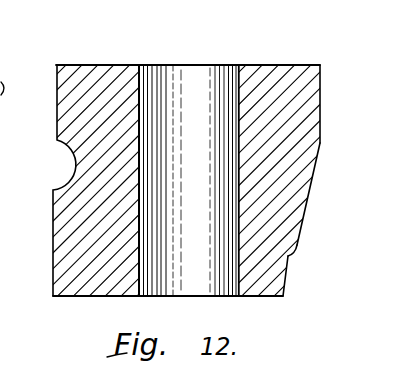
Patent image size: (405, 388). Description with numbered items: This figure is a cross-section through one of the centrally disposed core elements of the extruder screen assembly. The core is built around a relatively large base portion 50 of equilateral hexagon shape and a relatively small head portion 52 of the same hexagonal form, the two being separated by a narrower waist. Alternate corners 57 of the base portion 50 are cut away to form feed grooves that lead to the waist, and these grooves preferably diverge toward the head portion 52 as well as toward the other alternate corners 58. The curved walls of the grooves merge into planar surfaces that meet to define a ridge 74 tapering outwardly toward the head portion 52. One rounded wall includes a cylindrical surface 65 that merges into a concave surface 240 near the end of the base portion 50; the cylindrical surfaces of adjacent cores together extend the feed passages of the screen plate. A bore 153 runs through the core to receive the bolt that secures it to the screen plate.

The base portion 50 is at (80, 298).
The head portion 52 is at (275, 72).
The alternate corners 57 is at (321, 100).
The other alternate corners 58 is at (57, 71).
The cylindrical surface 65 is at (286, 286).
The ridge 74 is at (308, 199).
The bore 153 is at (140, 83).
The concave surface 240 is at (293, 248).